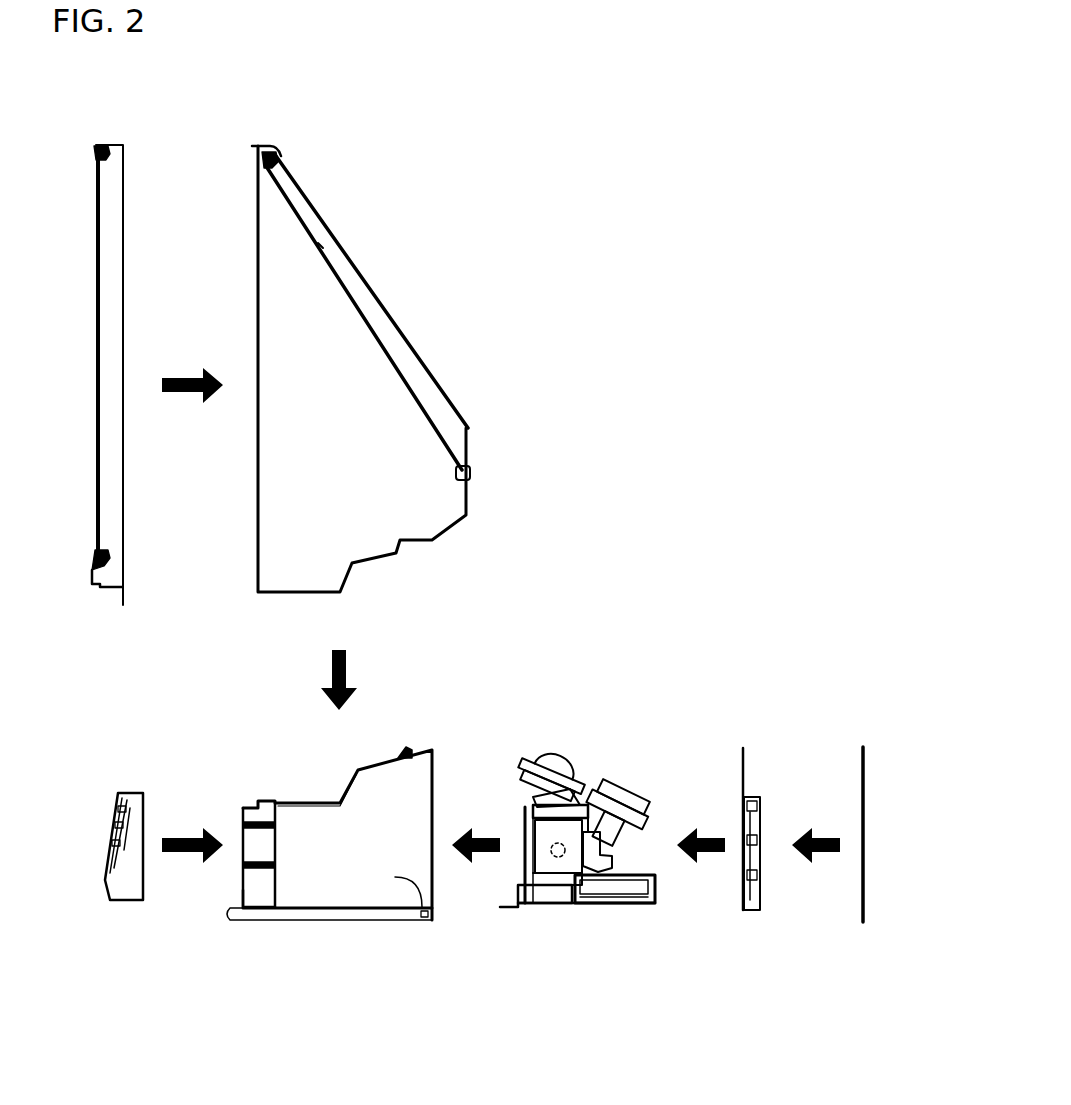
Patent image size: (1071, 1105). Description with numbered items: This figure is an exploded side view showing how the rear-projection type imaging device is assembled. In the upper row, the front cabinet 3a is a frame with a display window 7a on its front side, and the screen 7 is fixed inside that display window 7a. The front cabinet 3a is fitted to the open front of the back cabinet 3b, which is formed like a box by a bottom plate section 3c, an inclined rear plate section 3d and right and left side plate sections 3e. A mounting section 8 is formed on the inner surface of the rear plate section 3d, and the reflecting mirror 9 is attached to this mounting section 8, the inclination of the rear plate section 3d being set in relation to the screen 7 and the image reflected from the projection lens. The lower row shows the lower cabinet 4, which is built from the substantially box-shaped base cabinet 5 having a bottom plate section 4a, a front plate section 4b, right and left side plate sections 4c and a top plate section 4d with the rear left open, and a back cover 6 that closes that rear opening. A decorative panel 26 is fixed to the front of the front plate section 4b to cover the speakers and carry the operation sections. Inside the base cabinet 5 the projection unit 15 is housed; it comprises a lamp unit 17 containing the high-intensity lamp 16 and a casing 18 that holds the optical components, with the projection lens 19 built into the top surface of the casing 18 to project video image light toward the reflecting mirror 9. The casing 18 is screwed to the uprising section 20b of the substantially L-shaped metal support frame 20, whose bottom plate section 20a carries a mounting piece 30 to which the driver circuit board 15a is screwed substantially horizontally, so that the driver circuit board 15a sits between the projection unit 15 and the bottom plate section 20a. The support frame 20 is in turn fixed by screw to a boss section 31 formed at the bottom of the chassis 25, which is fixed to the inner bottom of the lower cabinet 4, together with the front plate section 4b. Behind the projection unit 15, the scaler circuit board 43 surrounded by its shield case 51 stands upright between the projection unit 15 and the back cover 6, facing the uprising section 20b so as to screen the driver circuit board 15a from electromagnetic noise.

The front cabinet 3a is at (85, 330).
The back cabinet 3b is at (400, 365).
The bottom plate section 3c is at (262, 600).
The rear plate section 3d is at (440, 385).
The side plate sections 3e is at (395, 518).
The lower cabinet 4 is at (281, 861).
The bottom plate section 4a is at (330, 910).
The front plate section 4b is at (245, 890).
The side plate sections 4c is at (400, 878).
The top plate section 4d is at (300, 802).
The base cabinet 5 is at (281, 839).
The back cover 6 is at (866, 797).
The screen 7 is at (97, 345).
The display window 7a is at (97, 160).
The mounting section 8 is at (278, 150).
The reflecting mirror 9 is at (388, 307).
The projection unit 15 is at (582, 860).
The driver circuit board 15a is at (645, 860).
The lamp 16 is at (558, 857).
The lamp unit 17 is at (607, 900).
The casing 18 is at (516, 784).
The projection lens 19 is at (558, 757).
The support frame 20 is at (528, 915).
The bottom plate section 20a is at (557, 910).
The uprising section 20b is at (522, 820).
The chassis 25 is at (530, 908).
The decorative panel 26 is at (104, 866).
The mounting piece 30 is at (660, 905).
The boss section 31 is at (258, 866).
The scaler circuit board 43 is at (788, 840).
The shield case 51 is at (760, 895).